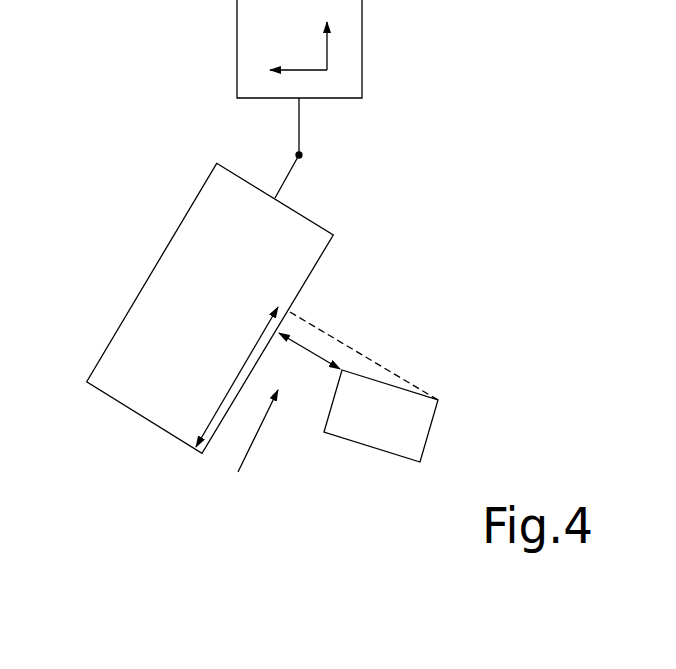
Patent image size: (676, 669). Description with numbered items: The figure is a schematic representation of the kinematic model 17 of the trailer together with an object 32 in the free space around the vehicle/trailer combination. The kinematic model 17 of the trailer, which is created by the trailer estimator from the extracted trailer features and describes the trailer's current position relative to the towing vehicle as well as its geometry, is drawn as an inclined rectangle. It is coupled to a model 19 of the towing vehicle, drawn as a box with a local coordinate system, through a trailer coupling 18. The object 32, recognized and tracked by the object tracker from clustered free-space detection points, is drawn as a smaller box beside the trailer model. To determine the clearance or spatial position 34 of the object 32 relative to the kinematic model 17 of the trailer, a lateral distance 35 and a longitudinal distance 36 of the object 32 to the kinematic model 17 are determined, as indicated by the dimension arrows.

The model of the towing vehicle 19 is at (362, 58).
The trailer coupling 18 is at (299, 130).
The kinematic model of the trailer 17 is at (141, 288).
The longitudinal distance 36 is at (240, 370).
The lateral distance 35 is at (305, 348).
The spatial position 34 is at (250, 450).
The object 32 is at (430, 430).